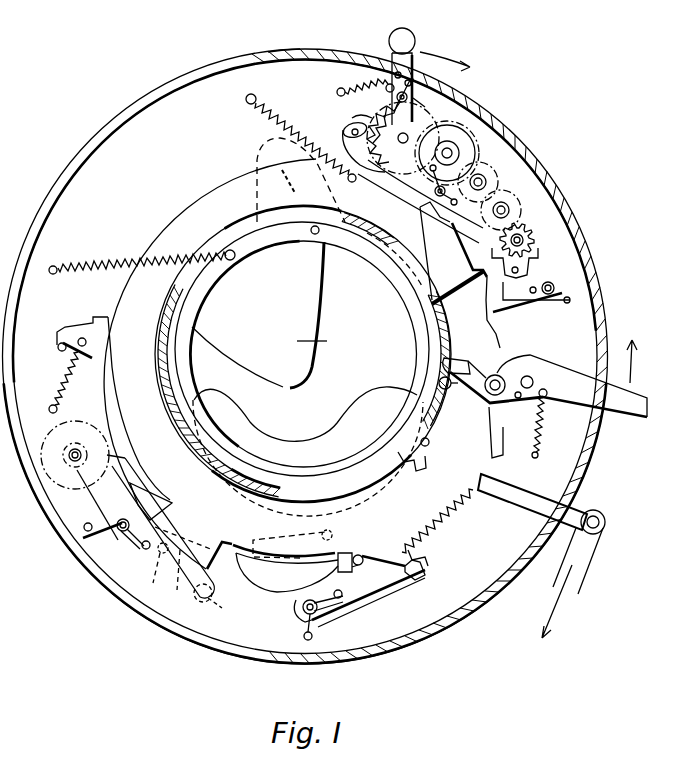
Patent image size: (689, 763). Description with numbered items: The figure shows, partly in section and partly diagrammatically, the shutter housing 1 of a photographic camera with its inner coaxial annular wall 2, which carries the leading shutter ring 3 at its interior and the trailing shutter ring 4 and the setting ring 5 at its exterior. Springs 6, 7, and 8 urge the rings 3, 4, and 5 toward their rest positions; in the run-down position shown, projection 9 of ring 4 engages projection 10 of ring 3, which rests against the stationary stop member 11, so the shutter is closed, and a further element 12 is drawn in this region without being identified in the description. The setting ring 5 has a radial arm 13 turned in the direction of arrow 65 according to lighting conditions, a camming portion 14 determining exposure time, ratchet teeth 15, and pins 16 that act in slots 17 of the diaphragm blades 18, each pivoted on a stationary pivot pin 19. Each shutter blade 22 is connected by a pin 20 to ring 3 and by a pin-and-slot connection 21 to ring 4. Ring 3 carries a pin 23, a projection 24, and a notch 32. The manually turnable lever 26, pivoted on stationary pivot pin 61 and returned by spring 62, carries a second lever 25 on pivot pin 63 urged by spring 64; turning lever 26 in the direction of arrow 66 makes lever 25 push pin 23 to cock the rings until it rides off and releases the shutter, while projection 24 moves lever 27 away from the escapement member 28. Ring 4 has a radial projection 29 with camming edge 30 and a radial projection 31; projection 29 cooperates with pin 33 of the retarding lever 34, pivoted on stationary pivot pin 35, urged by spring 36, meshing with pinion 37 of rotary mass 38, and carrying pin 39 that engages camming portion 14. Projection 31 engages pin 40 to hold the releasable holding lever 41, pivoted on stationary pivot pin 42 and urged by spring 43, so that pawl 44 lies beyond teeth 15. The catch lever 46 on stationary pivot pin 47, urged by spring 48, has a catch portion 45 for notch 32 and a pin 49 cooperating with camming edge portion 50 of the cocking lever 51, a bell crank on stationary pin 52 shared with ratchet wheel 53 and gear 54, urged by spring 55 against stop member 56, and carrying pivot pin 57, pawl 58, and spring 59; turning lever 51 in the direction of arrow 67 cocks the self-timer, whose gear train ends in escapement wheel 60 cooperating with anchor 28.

The shutter housing 1 is at (102, 136).
The inner coaxial annular wall 2 is at (165, 348).
The leading shutter ring 3 is at (182, 391).
The trailing shutter ring 4 is at (204, 200).
The setting ring 5 is at (100, 404).
The spring 6 is at (96, 263).
The spring 7 is at (262, 115).
The spring 8 is at (60, 386).
The projection 9 is at (373, 488).
The projection 10 is at (420, 462).
The stationary stop member 11 is at (429, 440).
The pawl 12 is at (58, 348).
The radial arm 13 is at (591, 512).
The camming portion 14 is at (273, 592).
The ratchet teeth 15 is at (466, 498).
The pins 16 is at (331, 538).
The slots 17 is at (293, 548).
The diaphragm blades 18 is at (308, 446).
The stationary pivot pin 19 is at (259, 500).
The pin 20 is at (318, 315).
The pin-and-slot connection 21 is at (262, 162).
The shutter blades 22 is at (328, 341).
The pin 23 is at (439, 382).
The projection 24 is at (430, 296).
The second lever 25 is at (463, 363).
The manually turnable lever 26 is at (630, 408).
The lever 27 is at (486, 320).
The escapement member 28 is at (538, 268).
The radial projection 29 is at (194, 585).
The camming edge 30 is at (219, 564).
The radial projection 31 is at (355, 572).
The notch 32 is at (432, 200).
The pin 33 is at (163, 560).
The retarding lever 34 is at (100, 503).
The stationary pivot pin 35 is at (124, 533).
The spring 36 is at (95, 532).
The pinion 37 is at (73, 472).
The rotary mass 38 is at (52, 470).
The pin 39 is at (224, 611).
The pin 40 is at (368, 590).
The releasable holding lever 41 is at (398, 585).
The stationary pivot pin 42 is at (318, 614).
The spring 43 is at (302, 634).
The pawl 44 is at (415, 566).
The catch portion 45 is at (455, 245).
The catch lever 46 is at (368, 170).
The stationary pivot pin 47 is at (430, 195).
The spring 48 is at (505, 190).
The pin 49 is at (350, 132).
The camming edge portion 50 is at (370, 126).
The cocking lever 51 is at (388, 40).
The stationary pin 52 is at (456, 126).
The ratchet wheel 53 is at (426, 103).
The gear 54 is at (483, 163).
The spring 55 is at (290, 56).
The stop member 56 is at (338, 89).
The pivot pin 57 is at (414, 86).
The pawl 58 is at (388, 116).
The spring 59 is at (366, 78).
The escapement wheel 60 is at (531, 232).
The stationary pivot pin 61 is at (529, 376).
The spring 62 is at (545, 420).
The pivot pin 63 is at (500, 401).
The spring 64 is at (498, 375).
The arrow 65 is at (551, 628).
The arrow 66 is at (630, 349).
The arrow 67 is at (463, 59).